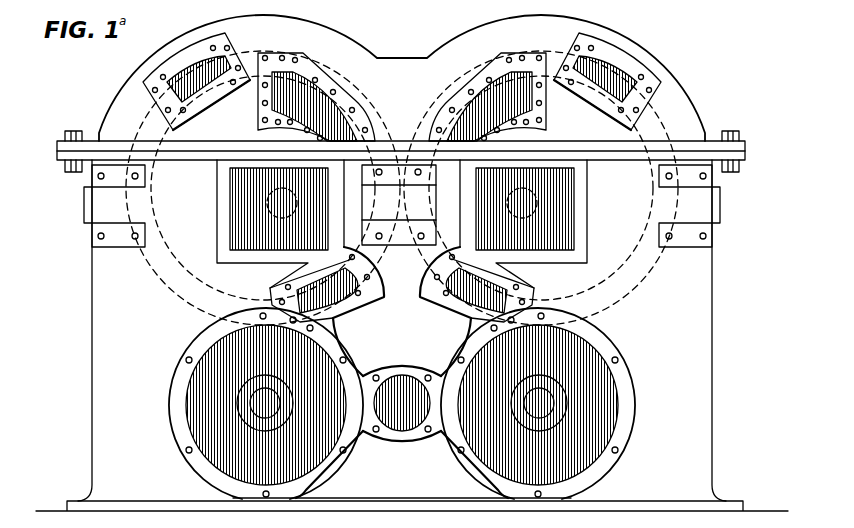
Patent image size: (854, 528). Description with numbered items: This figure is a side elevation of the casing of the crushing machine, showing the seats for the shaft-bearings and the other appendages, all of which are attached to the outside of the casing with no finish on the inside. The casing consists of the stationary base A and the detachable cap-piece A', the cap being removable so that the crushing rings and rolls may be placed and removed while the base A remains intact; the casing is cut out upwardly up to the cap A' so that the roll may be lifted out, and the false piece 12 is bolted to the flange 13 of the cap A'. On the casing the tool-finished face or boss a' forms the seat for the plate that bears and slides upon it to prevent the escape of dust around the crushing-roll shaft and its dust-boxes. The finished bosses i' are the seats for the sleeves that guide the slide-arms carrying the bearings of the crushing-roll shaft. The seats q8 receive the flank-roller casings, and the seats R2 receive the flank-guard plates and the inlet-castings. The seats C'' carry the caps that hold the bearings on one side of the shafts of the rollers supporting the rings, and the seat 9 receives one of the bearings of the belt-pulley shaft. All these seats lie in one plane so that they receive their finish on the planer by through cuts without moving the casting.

The stationary base A is at (412, 335).
The cap-piece A' is at (400, 170).
The flange 13 is at (236, 143).
The finished bosses i' is at (402, 206).
The tool-finished face or boss a' is at (400, 224).
The false piece 12 is at (284, 164).
The seats for the flank-guard plates and inlet-castings R2 is at (526, 53).
The seats for the flank-roller casings q8 is at (402, 177).
The seats for the caps C'' is at (407, 403).
The seat for the belt-pulley shaft bearing 9 is at (402, 396).